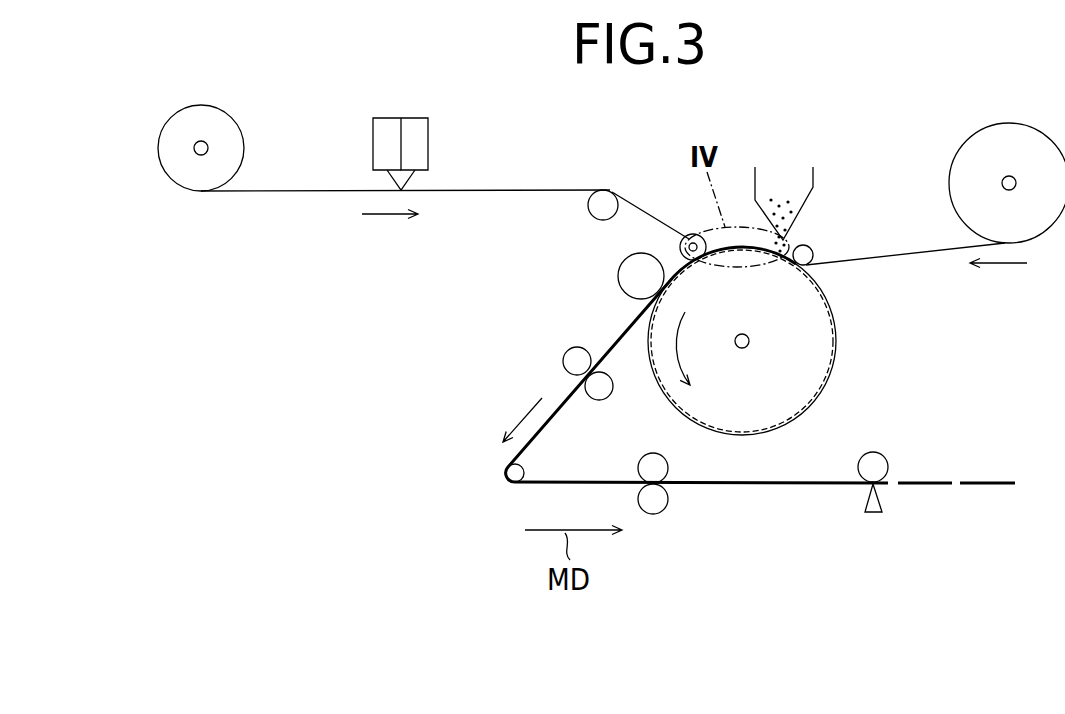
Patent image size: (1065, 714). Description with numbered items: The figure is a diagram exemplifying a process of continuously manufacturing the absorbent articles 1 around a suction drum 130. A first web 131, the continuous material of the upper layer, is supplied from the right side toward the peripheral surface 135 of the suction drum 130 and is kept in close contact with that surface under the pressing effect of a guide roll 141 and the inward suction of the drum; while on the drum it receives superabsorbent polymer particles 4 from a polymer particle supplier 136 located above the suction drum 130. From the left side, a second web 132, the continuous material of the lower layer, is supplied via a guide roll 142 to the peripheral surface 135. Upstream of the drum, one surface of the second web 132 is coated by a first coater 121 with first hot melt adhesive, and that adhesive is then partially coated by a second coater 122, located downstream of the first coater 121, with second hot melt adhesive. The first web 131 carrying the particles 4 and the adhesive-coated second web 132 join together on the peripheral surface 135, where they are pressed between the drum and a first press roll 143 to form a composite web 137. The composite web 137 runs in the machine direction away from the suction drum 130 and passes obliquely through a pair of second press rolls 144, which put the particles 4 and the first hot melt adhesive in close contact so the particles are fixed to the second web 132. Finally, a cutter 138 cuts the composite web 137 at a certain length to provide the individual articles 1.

The article 1 is at (1001, 481).
The superabsorbent polymer particles 4 is at (796, 218).
The first coater 121 is at (374, 140).
The second coater 122 is at (428, 140).
The suction drum 130 is at (841, 393).
The first web 131 is at (936, 251).
The second web 132 is at (290, 191).
The peripheral surface 135 is at (836, 332).
The polymer particle supplier 136 is at (814, 172).
The composite web 137 is at (563, 408).
The cutter 138 is at (874, 513).
The guide roll 141 is at (812, 252).
The guide roll 142 is at (683, 240).
The first press roll 143 is at (618, 272).
The second press rolls 144 is at (592, 390).